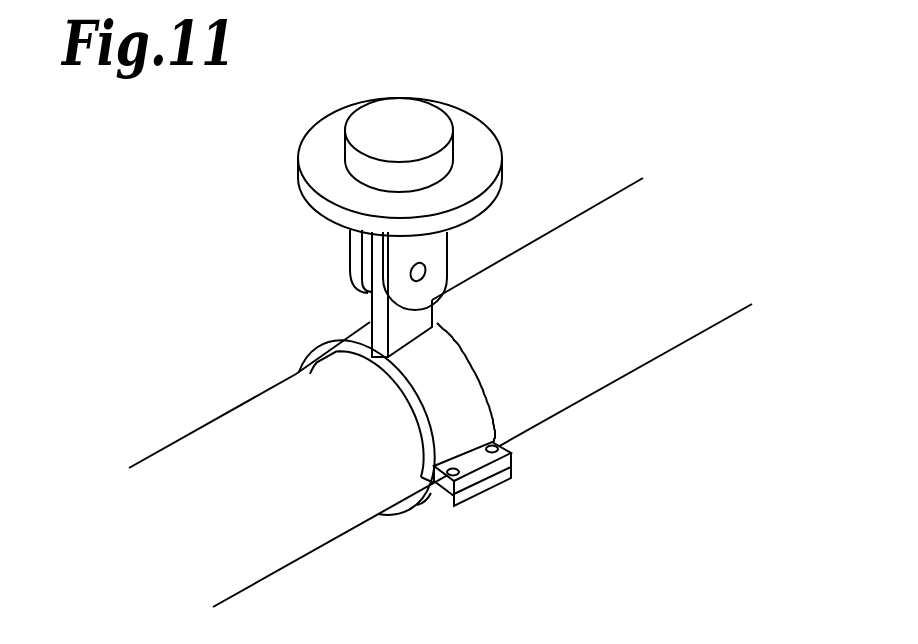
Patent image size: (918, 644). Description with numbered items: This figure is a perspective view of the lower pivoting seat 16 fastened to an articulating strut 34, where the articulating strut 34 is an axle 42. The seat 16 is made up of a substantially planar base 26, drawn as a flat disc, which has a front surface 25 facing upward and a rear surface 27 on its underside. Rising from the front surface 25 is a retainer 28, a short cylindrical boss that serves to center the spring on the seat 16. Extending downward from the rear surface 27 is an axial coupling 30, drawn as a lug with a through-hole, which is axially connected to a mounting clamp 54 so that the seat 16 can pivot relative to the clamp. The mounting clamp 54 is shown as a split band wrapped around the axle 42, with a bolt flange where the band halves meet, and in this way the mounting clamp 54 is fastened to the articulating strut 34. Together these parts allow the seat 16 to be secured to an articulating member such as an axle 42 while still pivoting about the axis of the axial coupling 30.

The lower pivoting seat 16 is at (422, 198).
The front surface 25 is at (485, 164).
The substantially planar base 26 is at (297, 180).
The rear surface 27 is at (320, 220).
The retainer 28 is at (407, 118).
The axial coupling 30 is at (397, 273).
The articulating strut 34 is at (480, 392).
The axle 42 is at (610, 350).
The mounting clamp 54 is at (473, 418).